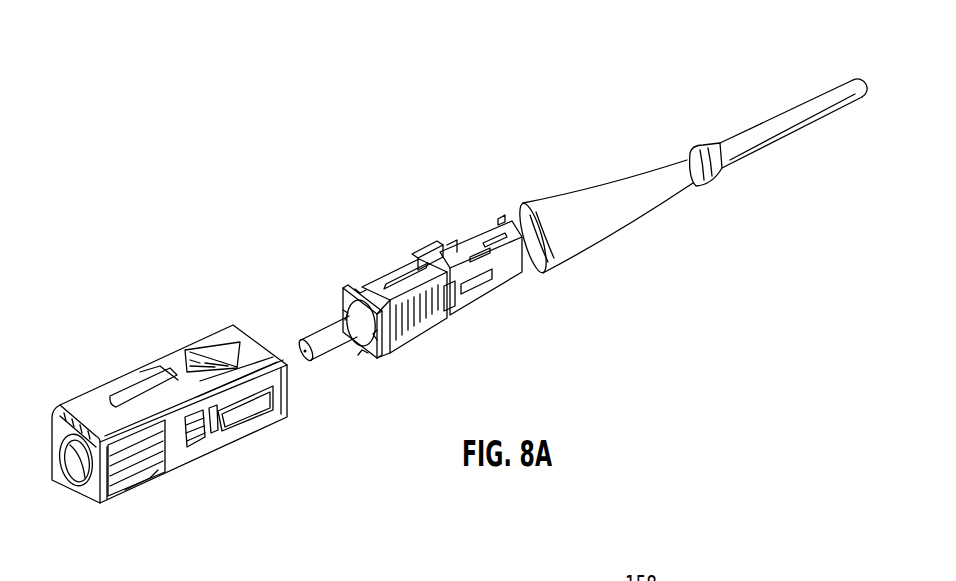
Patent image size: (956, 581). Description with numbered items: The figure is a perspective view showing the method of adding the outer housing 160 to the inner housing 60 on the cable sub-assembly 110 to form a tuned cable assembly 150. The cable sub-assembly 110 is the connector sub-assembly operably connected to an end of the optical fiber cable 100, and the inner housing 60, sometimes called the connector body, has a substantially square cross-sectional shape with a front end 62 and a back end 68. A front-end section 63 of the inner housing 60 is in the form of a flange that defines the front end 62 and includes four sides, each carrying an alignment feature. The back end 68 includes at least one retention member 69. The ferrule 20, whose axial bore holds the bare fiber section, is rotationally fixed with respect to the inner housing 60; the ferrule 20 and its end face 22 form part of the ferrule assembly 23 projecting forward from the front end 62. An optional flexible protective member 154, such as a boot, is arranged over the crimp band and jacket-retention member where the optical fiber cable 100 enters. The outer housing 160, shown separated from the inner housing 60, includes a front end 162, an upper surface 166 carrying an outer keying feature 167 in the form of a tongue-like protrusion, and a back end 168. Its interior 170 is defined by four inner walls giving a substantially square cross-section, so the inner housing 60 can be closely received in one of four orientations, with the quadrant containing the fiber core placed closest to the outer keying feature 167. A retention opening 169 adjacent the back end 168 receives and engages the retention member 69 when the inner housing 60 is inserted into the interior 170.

The cable assembly 150 is at (660, 58).
The cable sub-assembly 110 is at (567, 244).
The optical fiber cable 100 is at (805, 115).
The flexible protective member 154 is at (572, 210).
The back end 68 is at (500, 302).
The retention member 69 is at (445, 334).
The inner housing 60 is at (435, 303).
The front-end section 63 is at (361, 267).
The front end 62 is at (337, 300).
The ferrule assembly 23 is at (325, 322).
The ferrule 20 is at (340, 379).
The ferrule end face 22 is at (307, 353).
The outer housing 160 is at (158, 399).
The upper surface 166 is at (73, 412).
The outer keying feature 167 is at (128, 393).
The back end 168 is at (245, 330).
The retention opening 169 is at (253, 420).
The interior 170 is at (229, 415).
The front end 162 is at (87, 492).